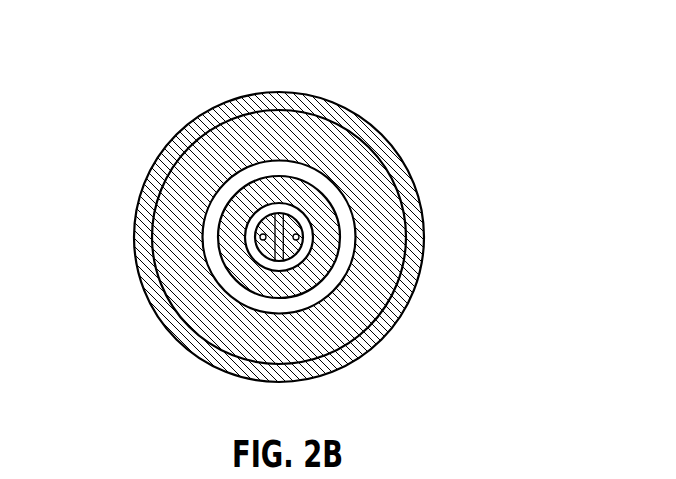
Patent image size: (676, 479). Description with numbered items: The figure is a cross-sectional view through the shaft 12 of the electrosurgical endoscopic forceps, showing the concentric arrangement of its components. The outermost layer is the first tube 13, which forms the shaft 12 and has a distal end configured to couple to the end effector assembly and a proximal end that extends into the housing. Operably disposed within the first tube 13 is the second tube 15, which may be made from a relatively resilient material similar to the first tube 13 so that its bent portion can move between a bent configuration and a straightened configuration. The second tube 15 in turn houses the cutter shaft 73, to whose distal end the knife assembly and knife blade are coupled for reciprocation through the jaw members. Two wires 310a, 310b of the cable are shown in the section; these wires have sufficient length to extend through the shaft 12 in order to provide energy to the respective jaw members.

The shaft 12 is at (286, 96).
The first tube 13 is at (364, 192).
The second tube 15 is at (240, 270).
The cutter shaft 73 is at (297, 243).
The wire 310a is at (260, 236).
The wire 310b is at (299, 237).